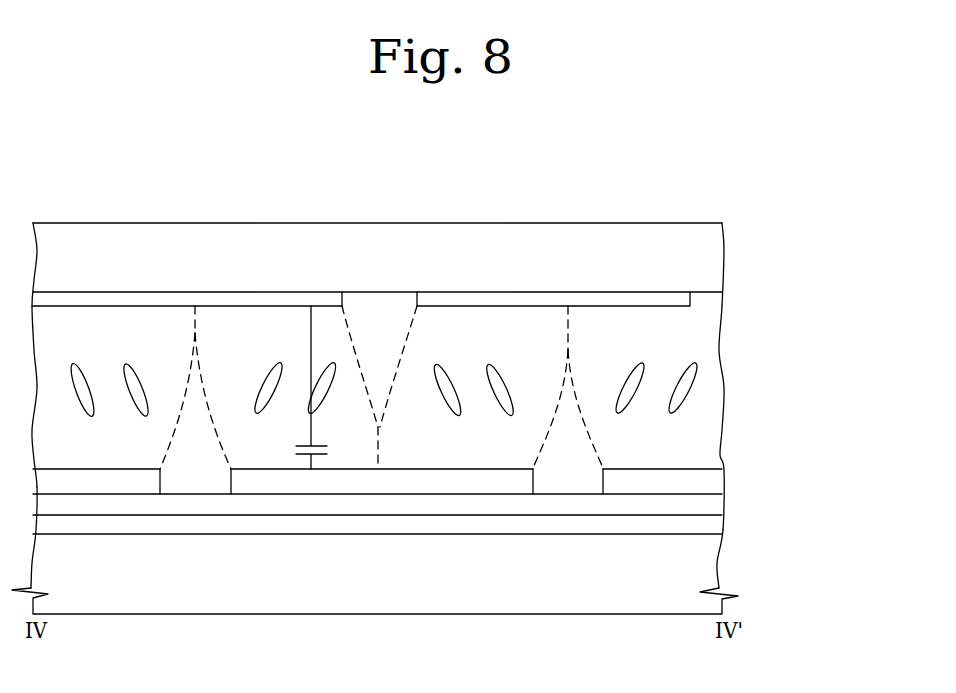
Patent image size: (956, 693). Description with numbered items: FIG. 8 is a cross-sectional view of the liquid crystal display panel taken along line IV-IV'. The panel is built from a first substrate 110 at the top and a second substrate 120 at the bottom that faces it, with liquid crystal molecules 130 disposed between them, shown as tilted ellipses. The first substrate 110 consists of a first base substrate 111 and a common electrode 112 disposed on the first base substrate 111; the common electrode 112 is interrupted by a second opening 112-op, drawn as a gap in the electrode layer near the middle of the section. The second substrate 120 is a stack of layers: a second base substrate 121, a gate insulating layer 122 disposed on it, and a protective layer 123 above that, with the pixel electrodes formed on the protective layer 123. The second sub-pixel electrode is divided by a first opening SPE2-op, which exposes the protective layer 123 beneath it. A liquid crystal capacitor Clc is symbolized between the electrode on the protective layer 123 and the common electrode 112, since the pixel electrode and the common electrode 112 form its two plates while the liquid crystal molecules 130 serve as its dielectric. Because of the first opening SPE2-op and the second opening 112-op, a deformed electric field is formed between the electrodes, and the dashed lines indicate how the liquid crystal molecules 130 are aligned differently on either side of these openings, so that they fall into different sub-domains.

The first substrate 110 is at (445, 269).
The first base substrate 111 is at (715, 247).
The common electrode 112 is at (417, 303).
The second opening 112-op is at (393, 298).
The second substrate 120 is at (435, 541).
The second base substrate 121 is at (712, 563).
The gate insulating layer 122 is at (715, 525).
The protective layer 123 is at (715, 503).
The liquid crystal molecules 130 is at (690, 388).
The liquid crystal capacitor Clc is at (331, 387).
The first opening SPE2-op is at (583, 480).